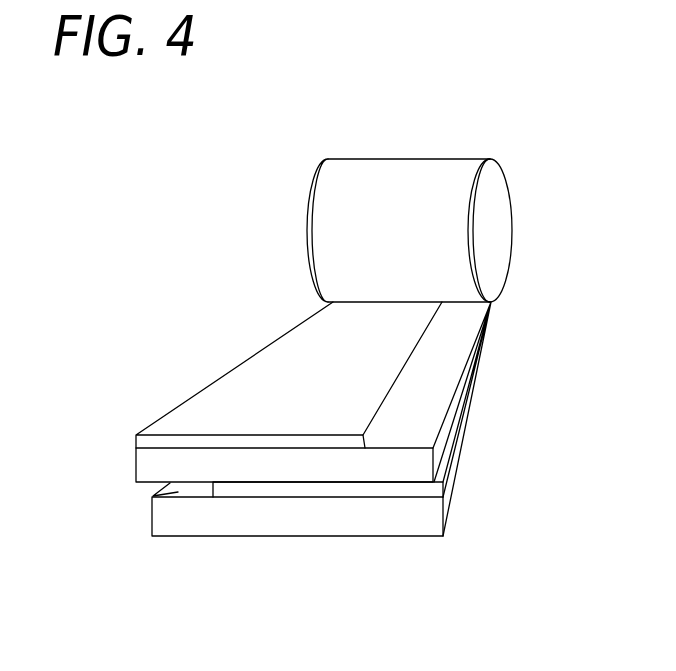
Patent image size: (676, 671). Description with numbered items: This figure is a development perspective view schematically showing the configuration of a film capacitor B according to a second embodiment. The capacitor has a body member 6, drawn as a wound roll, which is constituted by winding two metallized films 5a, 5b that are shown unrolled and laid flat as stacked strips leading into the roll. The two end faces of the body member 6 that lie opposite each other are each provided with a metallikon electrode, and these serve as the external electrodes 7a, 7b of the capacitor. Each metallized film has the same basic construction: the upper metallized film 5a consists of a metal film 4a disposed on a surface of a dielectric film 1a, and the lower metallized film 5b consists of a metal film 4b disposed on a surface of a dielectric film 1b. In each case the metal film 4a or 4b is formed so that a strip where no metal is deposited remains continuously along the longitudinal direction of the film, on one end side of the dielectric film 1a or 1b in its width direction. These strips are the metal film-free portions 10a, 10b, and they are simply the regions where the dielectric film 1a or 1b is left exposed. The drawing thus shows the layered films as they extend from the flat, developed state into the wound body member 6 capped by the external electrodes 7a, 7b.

The film capacitor B is at (487, 130).
The body member 6 is at (408, 168).
The external electrode 7a is at (307, 223).
The external electrode 7b is at (503, 213).
The metallized film 5a is at (105, 313).
The dielectric film 1a is at (158, 465).
The metal film 4a is at (197, 448).
The metal film-free portion 10a is at (438, 382).
The metallized film 5b is at (293, 613).
The dielectric film 1b is at (288, 517).
The metal film 4b is at (370, 490).
The metal film-free portion 10b is at (150, 490).